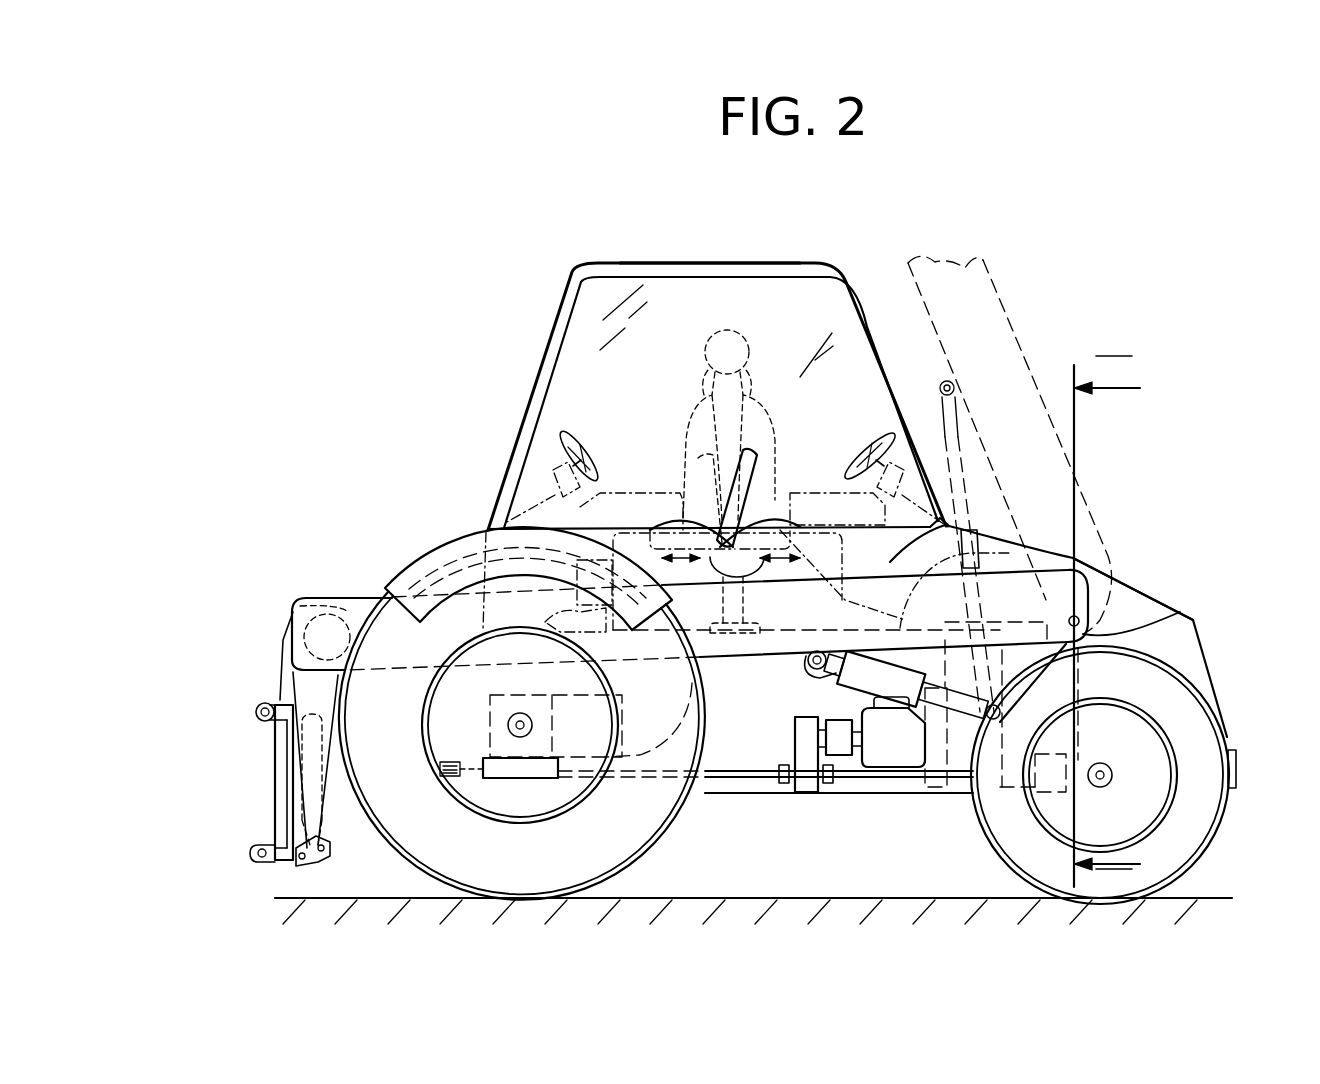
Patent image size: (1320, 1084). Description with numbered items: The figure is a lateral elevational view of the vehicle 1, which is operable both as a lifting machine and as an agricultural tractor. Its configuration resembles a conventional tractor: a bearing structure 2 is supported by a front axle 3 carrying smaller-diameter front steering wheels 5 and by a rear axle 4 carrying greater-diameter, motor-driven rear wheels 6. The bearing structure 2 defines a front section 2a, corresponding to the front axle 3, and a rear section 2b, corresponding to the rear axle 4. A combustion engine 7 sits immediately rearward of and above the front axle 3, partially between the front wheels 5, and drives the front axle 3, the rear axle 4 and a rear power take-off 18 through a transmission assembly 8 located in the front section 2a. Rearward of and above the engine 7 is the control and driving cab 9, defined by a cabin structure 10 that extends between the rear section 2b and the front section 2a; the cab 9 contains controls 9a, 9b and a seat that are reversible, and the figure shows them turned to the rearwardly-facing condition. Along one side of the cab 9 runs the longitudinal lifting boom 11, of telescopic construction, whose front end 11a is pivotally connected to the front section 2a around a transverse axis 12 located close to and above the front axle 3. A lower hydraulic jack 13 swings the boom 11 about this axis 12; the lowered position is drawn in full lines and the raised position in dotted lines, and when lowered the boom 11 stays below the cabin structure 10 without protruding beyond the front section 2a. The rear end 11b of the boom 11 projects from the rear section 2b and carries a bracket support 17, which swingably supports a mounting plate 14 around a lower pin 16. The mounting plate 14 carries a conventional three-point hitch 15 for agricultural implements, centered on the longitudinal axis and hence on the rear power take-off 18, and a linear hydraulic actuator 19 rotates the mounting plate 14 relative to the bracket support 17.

The vehicle 1 is at (446, 412).
The bearing structure 2 is at (1138, 602).
The front section 2a is at (1112, 545).
The rear section 2b is at (386, 503).
The front axle 3 is at (1105, 773).
The rear axle 4 is at (513, 720).
The front steering wheels 5 is at (1200, 830).
The rear wheels 6 is at (643, 816).
The combustion engine 7 is at (947, 762).
The transmission assembly 8 is at (865, 770).
The control and driving cab 9 is at (600, 262).
The steering wheel 9a is at (580, 443).
The pedal unit 9b is at (677, 540).
The cabin structure 10 is at (752, 262).
The lifting boom 11 is at (760, 660).
The front end of the lifting boom 11a is at (1068, 600).
The rear end of the lifting boom 11b is at (356, 597).
The transverse axis 12 is at (1117, 630).
The lower hydraulic jack 13 is at (905, 688).
The mounting plate 14 is at (262, 780).
The three-point hitch 15 is at (262, 710).
The lower pin 16 is at (300, 848).
The bracket support 17 is at (300, 680).
The rear power take-off 18 is at (467, 770).
The linear hydraulic actuator 19 is at (330, 815).